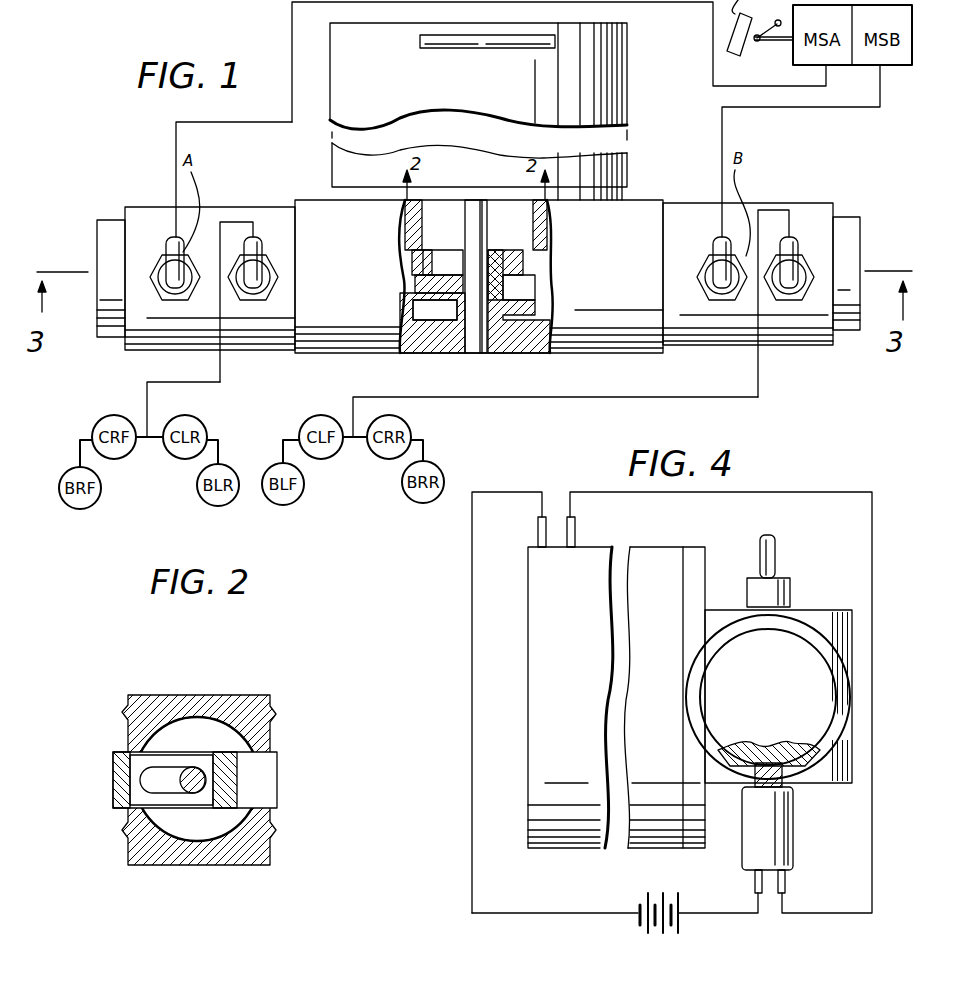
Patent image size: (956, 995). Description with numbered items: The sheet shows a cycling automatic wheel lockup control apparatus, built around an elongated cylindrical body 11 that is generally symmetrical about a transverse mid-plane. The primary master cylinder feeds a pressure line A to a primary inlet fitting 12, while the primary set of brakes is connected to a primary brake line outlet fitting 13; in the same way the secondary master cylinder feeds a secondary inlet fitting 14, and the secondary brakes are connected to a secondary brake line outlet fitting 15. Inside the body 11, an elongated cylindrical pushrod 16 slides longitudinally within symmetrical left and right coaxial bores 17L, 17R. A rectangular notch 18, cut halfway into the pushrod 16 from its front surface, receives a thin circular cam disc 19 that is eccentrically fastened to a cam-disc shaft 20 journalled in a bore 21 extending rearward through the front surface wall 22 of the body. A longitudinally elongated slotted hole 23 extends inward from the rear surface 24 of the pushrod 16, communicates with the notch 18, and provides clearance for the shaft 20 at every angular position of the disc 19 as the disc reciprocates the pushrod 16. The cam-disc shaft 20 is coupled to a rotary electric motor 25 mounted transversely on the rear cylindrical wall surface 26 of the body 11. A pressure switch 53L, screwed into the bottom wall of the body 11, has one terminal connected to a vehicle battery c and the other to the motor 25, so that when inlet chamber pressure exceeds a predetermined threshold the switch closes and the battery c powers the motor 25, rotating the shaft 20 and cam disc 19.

In FIG. 1, the elongated cylindrical body 11 is at (777, 200).
In FIG. 2, the elongated cylindrical body 11 is at (213, 865).
In FIG. 4, the elongated cylindrical body 11 is at (812, 782).
In FIG. 1, the primary inlet fitting 12 is at (170, 300).
In FIG. 1, the primary brake line outlet fitting 13 is at (248, 300).
In FIG. 1, the secondary inlet fitting 14 is at (784, 300).
In FIG. 1, the secondary brake line outlet fitting 15 is at (717, 300).
In FIG. 1, the pushrod 16 is at (512, 312).
In FIG. 2, the pushrod 16 is at (258, 767).
In FIG. 2, the left coaxial bore 17L is at (122, 749).
In FIG. 2, the right coaxial bore 17R is at (270, 729).
In FIG. 1, the notch 18 is at (414, 343).
In FIG. 2, the notch 18 is at (272, 790).
In FIG. 1, the cam disc 19 is at (426, 322).
In FIG. 1, the cam-disc shaft 20 is at (487, 248).
In FIG. 2, the cam-disc shaft 20 is at (193, 775).
In FIG. 1, the bore 21 is at (465, 353).
In FIG. 1, the front surface wall 22 is at (446, 354).
In FIG. 1, the slotted hole 23 is at (455, 266).
In FIG. 2, the slotted hole 23 is at (152, 796).
In FIG. 1, the rear surface 24 is at (403, 232).
In FIG. 1, the rotary electric motor 25 is at (632, 73).
In FIG. 4, the rotary electric motor 25 is at (528, 620).
In FIG. 1, the rear cylindrical wall surface 26 is at (648, 197).
In FIG. 4, the pressure switch 53L is at (797, 855).
In FIG. 4, the pressure line A is at (790, 598).
In FIG. 4, the vehicle battery c is at (663, 935).